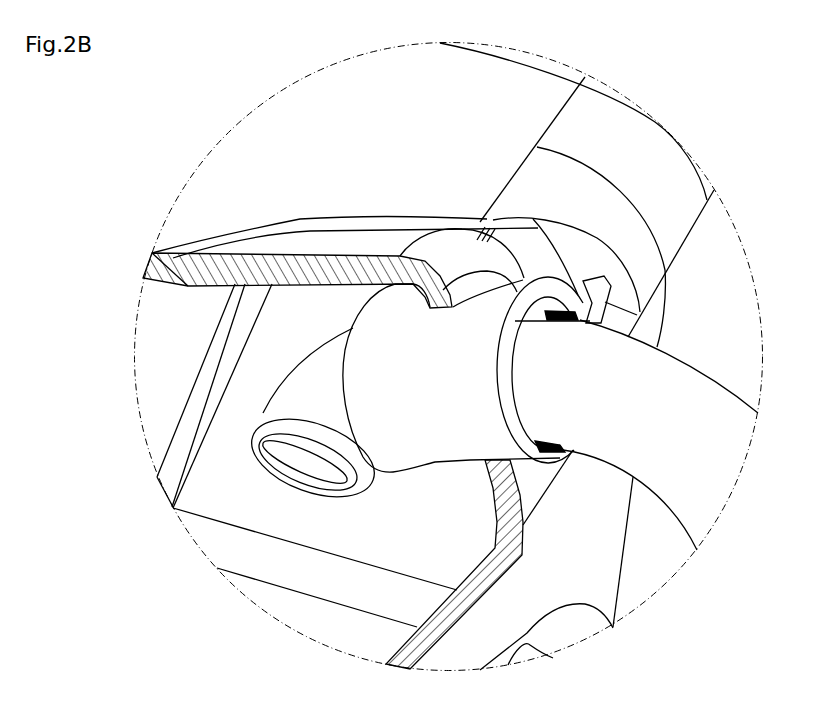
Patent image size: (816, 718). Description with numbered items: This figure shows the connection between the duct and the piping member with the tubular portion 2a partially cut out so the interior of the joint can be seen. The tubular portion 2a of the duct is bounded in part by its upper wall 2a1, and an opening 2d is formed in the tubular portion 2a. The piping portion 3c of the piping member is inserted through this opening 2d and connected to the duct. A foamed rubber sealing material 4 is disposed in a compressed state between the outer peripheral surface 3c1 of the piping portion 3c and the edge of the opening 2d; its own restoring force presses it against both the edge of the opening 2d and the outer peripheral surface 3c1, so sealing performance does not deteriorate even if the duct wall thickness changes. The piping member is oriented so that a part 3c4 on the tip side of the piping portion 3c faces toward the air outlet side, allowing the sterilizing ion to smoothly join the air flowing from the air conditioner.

The tubular portion 2a is at (283, 122).
The upper wall 2a1 is at (218, 177).
The opening 2d is at (470, 295).
The piping portion 3c is at (685, 348).
The outer peripheral surface 3c1 is at (698, 383).
The part on a tip side 3c4 is at (315, 375).
The foamed rubber sealing material 4 is at (443, 440).